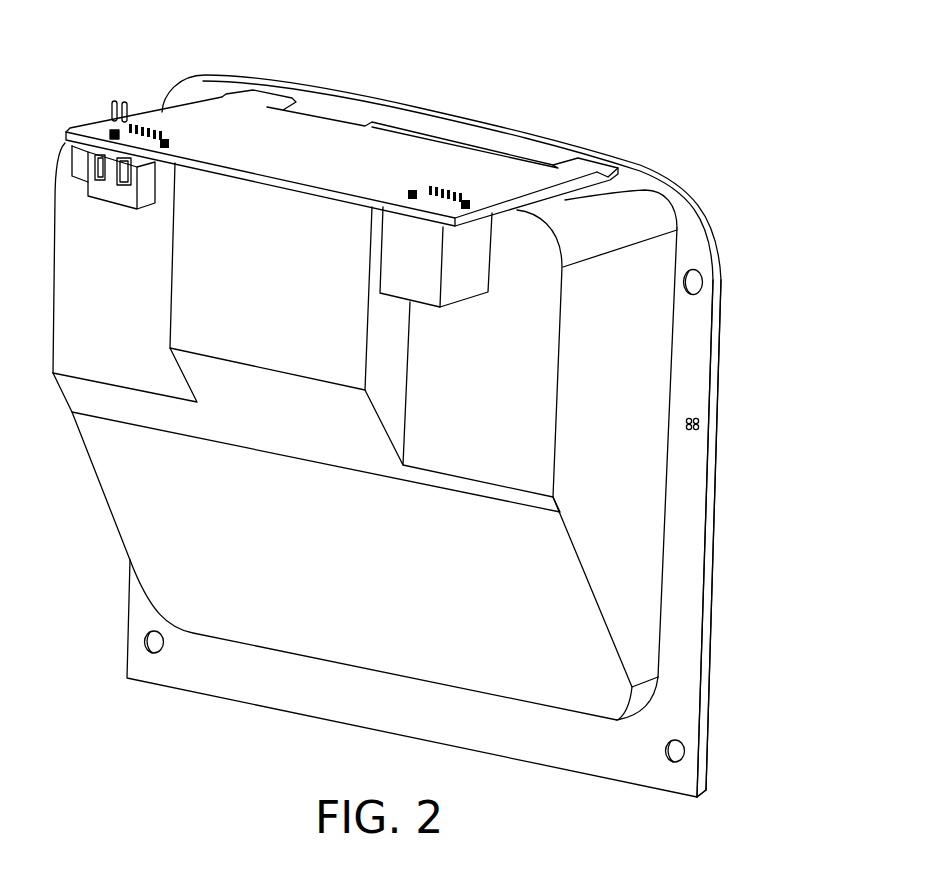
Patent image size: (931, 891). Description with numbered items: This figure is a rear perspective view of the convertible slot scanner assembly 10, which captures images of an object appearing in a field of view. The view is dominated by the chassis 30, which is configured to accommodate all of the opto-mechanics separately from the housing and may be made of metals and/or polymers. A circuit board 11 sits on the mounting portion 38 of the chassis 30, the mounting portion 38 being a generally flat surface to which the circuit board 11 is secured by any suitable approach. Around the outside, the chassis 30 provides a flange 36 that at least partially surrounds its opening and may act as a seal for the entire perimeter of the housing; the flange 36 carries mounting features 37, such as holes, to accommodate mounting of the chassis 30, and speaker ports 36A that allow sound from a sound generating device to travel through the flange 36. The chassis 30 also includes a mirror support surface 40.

The convertible slot scanner assembly 10 is at (739, 622).
The circuit board 11 is at (262, 100).
The chassis 30 is at (685, 778).
The flange 36 is at (697, 505).
The speaker ports 36A is at (700, 422).
The mounting features 37 is at (703, 280).
The mounting portion 38 is at (677, 226).
The mirror support surface 40 is at (153, 537).